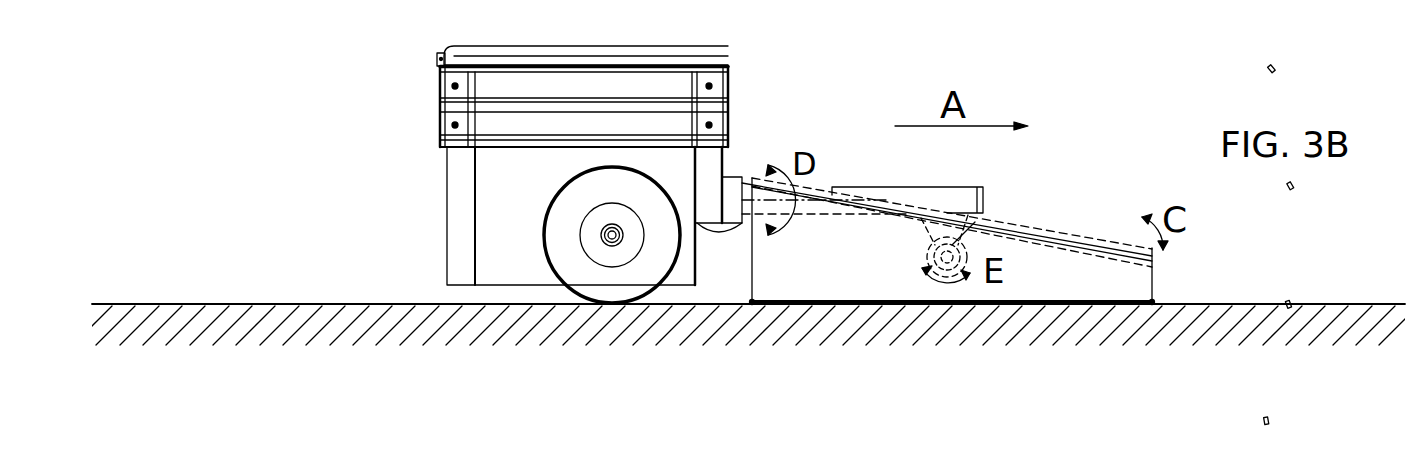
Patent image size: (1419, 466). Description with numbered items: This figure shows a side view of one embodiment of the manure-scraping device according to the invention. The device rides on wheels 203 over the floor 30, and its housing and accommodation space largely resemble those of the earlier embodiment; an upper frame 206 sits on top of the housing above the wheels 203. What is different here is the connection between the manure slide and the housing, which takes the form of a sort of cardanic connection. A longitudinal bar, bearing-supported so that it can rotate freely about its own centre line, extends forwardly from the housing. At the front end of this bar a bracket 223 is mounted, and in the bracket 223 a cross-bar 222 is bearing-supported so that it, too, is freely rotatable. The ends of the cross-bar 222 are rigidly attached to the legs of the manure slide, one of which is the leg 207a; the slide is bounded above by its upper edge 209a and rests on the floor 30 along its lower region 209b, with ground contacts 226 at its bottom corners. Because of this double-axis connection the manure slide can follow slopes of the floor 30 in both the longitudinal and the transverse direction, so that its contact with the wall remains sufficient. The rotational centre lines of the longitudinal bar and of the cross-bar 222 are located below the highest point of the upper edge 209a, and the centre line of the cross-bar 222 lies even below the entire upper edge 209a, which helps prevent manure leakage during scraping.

The floor 30 is at (1257, 303).
The upper frame 206 is at (490, 88).
The wheels 203 is at (563, 232).
The upper edge 209a is at (997, 227).
The trailer base plate 209b is at (995, 302).
The leg 207a is at (1050, 273).
The bracket 223 is at (942, 227).
The cross-bar 222 is at (946, 256).
The ground contact skid 226 is at (752, 303).